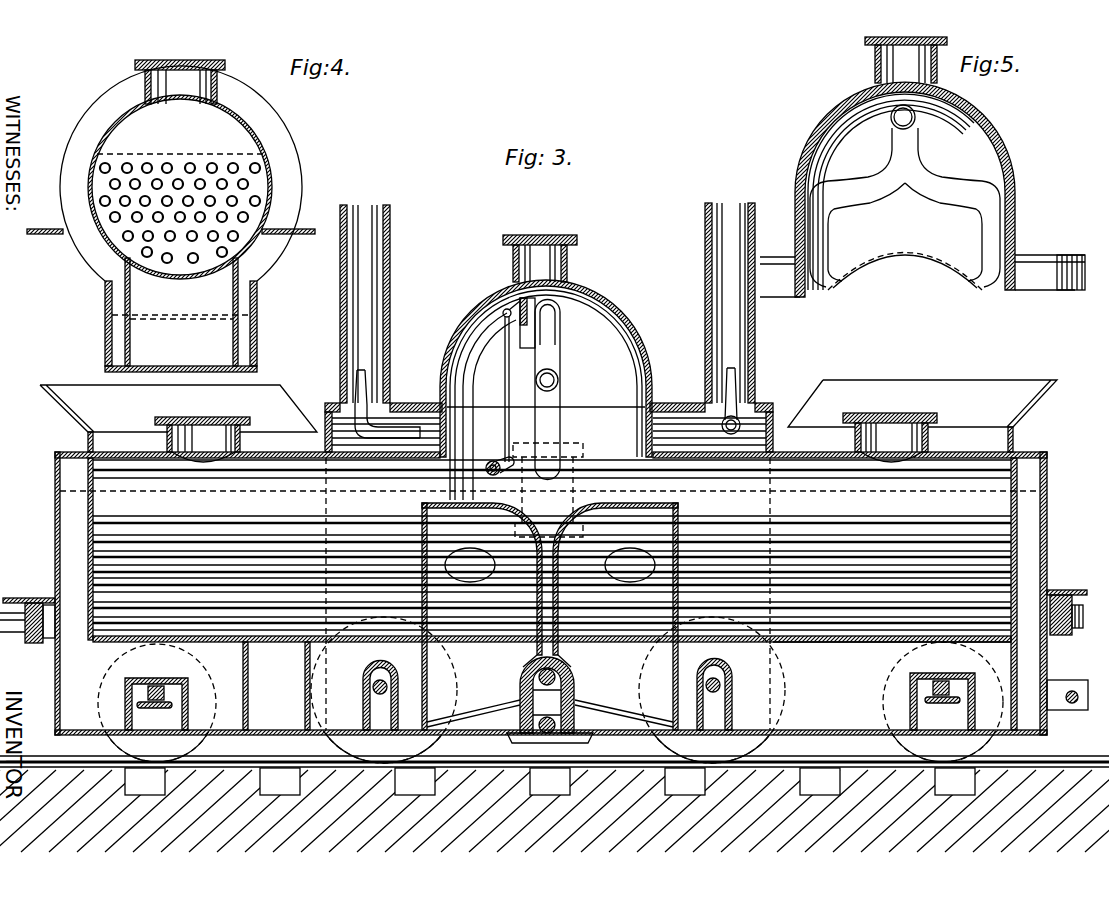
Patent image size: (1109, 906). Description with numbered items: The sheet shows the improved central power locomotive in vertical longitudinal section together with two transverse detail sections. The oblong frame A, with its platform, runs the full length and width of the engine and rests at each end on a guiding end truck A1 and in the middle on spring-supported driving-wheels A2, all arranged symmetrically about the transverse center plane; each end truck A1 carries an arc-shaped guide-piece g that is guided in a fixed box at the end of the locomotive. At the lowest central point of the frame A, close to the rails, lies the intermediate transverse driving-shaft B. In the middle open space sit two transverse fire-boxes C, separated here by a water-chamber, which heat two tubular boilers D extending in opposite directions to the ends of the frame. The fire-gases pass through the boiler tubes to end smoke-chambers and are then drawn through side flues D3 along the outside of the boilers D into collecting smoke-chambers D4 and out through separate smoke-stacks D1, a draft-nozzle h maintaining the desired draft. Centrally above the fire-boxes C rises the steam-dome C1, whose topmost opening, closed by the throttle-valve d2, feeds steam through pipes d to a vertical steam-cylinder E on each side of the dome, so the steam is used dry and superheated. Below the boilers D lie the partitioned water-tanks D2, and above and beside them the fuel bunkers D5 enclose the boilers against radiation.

In FIG. 4, the frame A is at (167, 246).
In FIG. 3, the frame A is at (543, 602).
In FIG. 3, the end trucks A1 is at (550, 703).
In FIG. 3, the driving-wheels A2 is at (547, 711).
In FIG. 3, the intermediate transverse driving-shaft B is at (550, 710).
In FIG. 3, the fire-boxes C is at (550, 616).
In FIG. 5, the steam-dome C1 is at (914, 167).
In FIG. 3, the steam-dome C1 is at (546, 367).
In FIG. 4, the boilers D is at (180, 169).
In FIG. 3, the boilers D is at (551, 593).
In FIG. 3, the smoke-stacks D1 is at (547, 303).
In FIG. 4, the water-tanks D2 is at (181, 315).
In FIG. 3, the water-tanks D2 is at (276, 686).
In FIG. 4, the side flues D3 is at (177, 322).
In FIG. 3, the side flues D3 is at (892, 674).
In FIG. 3, the collecting smoke-chambers D4 is at (565, 417).
In FIG. 3, the bunkers D5 is at (548, 421).
In FIG. 5, the steam pipes d is at (905, 196).
In FIG. 3, the steam pipes d is at (552, 389).
In FIG. 3, the throttle-valve d2 is at (498, 388).
In FIG. 5, the steam-cylinder E is at (922, 291).
In FIG. 3, the steam-cylinder E is at (553, 490).
In FIG. 3, the draft-nozzle h is at (547, 396).
In FIG. 3, the arc-shaped guide-piece g is at (1078, 695).